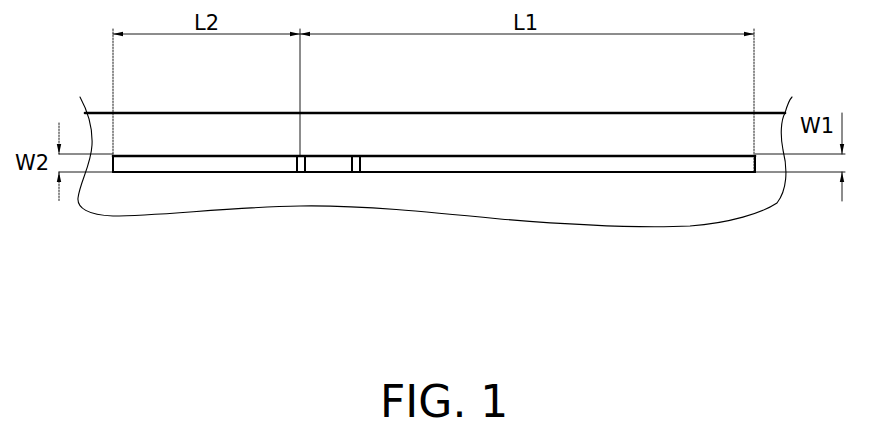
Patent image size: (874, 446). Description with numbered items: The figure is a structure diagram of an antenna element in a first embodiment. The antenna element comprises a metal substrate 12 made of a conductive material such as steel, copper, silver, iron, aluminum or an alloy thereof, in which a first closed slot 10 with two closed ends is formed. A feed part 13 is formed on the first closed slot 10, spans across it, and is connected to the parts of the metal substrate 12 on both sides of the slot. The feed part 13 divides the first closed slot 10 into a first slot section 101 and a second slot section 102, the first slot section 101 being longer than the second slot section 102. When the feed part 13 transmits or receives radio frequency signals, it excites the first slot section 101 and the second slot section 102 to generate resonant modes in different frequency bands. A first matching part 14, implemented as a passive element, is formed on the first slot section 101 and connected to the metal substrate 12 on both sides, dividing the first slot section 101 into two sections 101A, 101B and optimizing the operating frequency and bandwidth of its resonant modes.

The first closed slot 10 is at (400, 310).
The metal substrate 12 is at (483, 130).
The feed part 13 is at (300, 166).
The first matching part 14 is at (357, 165).
The first slot section 101 is at (448, 270).
The section of first slot section 101A is at (325, 163).
The section of first slot section 101B is at (412, 163).
The second slot section 102 is at (243, 163).